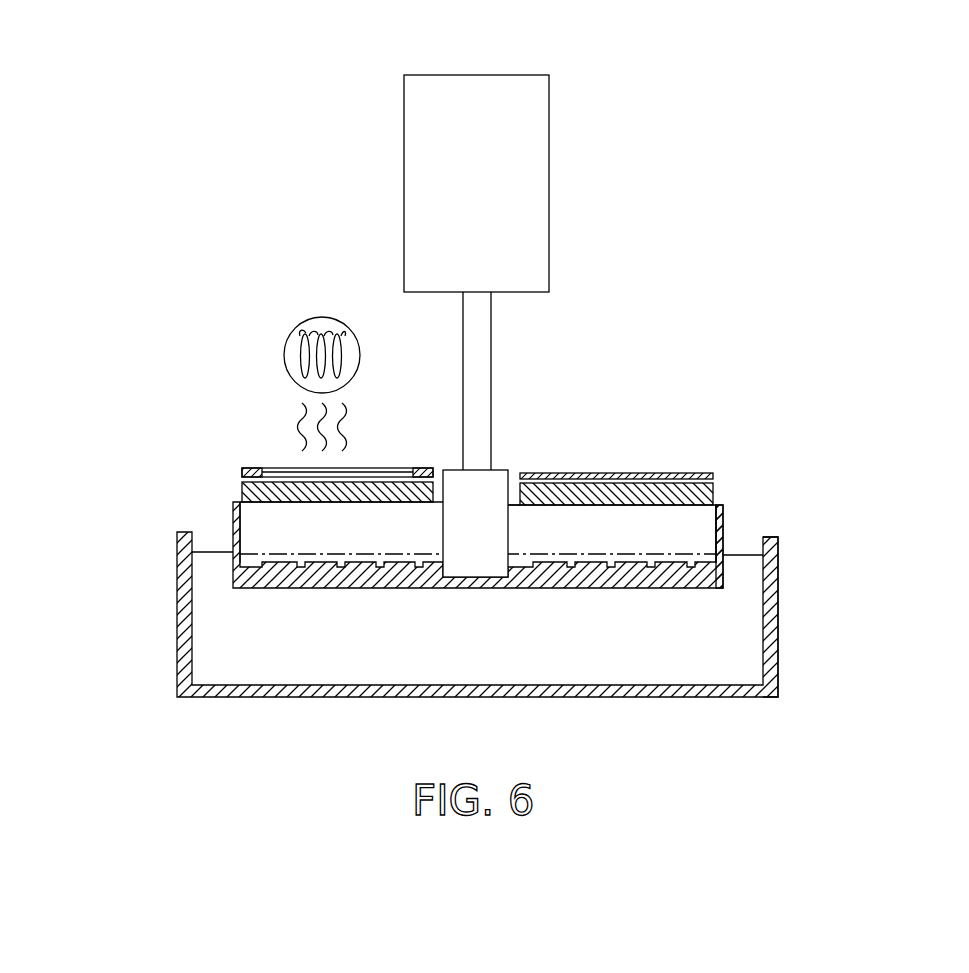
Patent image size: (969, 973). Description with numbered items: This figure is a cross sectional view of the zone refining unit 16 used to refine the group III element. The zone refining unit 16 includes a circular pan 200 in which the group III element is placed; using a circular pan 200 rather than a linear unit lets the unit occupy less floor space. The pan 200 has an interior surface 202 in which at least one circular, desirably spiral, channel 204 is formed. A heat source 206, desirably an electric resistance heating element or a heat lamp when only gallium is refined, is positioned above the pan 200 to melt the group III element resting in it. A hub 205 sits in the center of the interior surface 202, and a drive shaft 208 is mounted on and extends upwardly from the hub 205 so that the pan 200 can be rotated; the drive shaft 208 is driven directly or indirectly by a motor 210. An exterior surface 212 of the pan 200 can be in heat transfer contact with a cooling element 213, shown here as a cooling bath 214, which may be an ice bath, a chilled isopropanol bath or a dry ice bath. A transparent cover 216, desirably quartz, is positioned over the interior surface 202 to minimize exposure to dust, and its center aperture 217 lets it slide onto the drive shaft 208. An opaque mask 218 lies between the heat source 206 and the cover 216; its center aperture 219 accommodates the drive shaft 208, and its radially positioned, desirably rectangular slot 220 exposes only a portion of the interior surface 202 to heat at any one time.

The zone refining unit 16 is at (245, 128).
The circular pan 200 is at (721, 518).
The interior surface 202 is at (253, 518).
The channel 204 is at (258, 566).
The hub 205 is at (500, 468).
The heat source 206 is at (282, 360).
The drive shaft 208 is at (491, 358).
The motor 210 is at (530, 170).
The exterior surface 212 is at (733, 545).
The cooling element 213 is at (778, 652).
The cooling bath 214 is at (177, 645).
The transparent cover 216 is at (716, 500).
The center aperture 217 is at (515, 492).
The opaque mask 218 is at (714, 473).
The center aperture 219 is at (437, 468).
The slot 220 is at (275, 468).